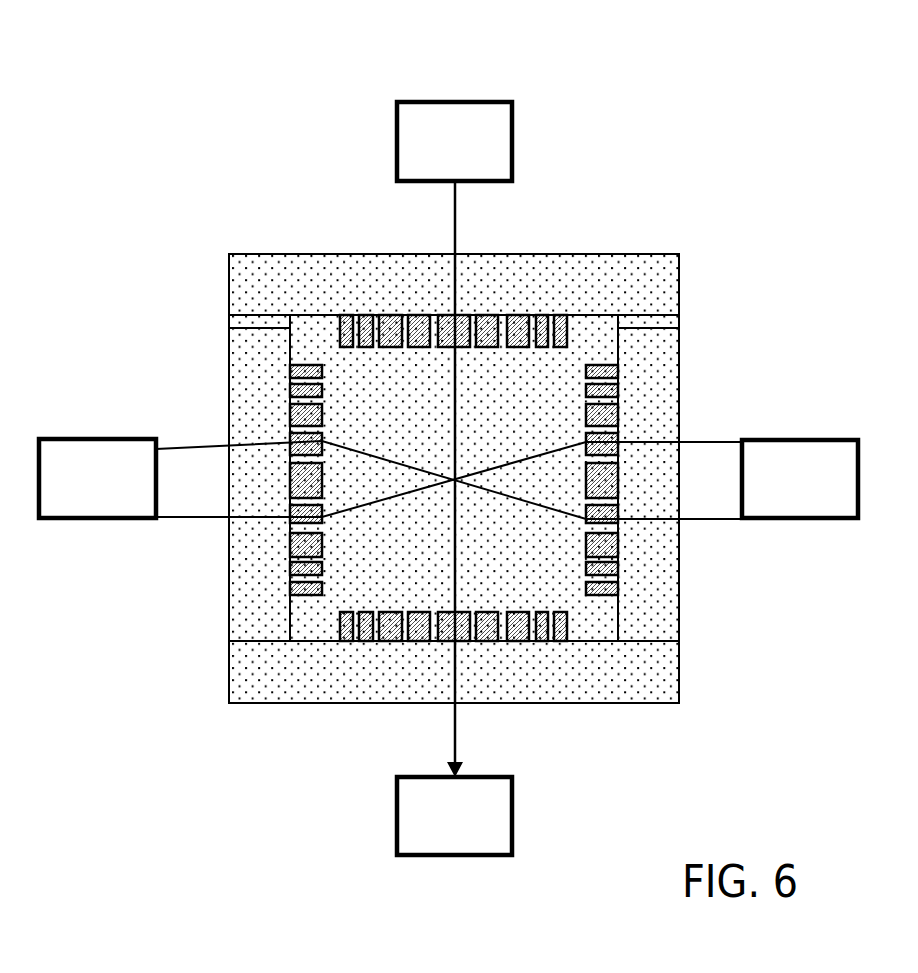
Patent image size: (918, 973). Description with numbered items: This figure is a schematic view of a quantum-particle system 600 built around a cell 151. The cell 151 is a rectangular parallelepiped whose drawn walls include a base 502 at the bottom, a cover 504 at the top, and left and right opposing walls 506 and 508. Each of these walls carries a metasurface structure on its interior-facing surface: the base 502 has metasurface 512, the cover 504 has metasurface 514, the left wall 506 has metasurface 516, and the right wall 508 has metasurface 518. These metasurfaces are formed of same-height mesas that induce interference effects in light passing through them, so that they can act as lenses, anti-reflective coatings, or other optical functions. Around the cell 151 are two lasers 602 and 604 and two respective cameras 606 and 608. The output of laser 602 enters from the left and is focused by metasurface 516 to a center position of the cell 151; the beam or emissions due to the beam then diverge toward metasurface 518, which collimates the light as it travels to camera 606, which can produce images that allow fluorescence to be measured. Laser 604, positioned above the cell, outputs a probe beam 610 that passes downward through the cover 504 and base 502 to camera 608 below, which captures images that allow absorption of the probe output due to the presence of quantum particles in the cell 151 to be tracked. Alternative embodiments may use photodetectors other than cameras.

The quantum-particle system 600 is at (603, 64).
The laser 604 is at (434, 167).
The probe beam 610 is at (453, 227).
The cell 151 is at (456, 460).
The cover 504 is at (454, 288).
The base 502 is at (550, 687).
The left wall 506 is at (278, 361).
The right wall 508 is at (668, 361).
The metasurface 514 is at (556, 345).
The metasurface 512 is at (462, 612).
The metasurface 516 is at (322, 367).
The metasurface 518 is at (586, 392).
The laser 602 is at (77, 503).
The camera 606 is at (779, 503).
The camera 608 is at (434, 842).